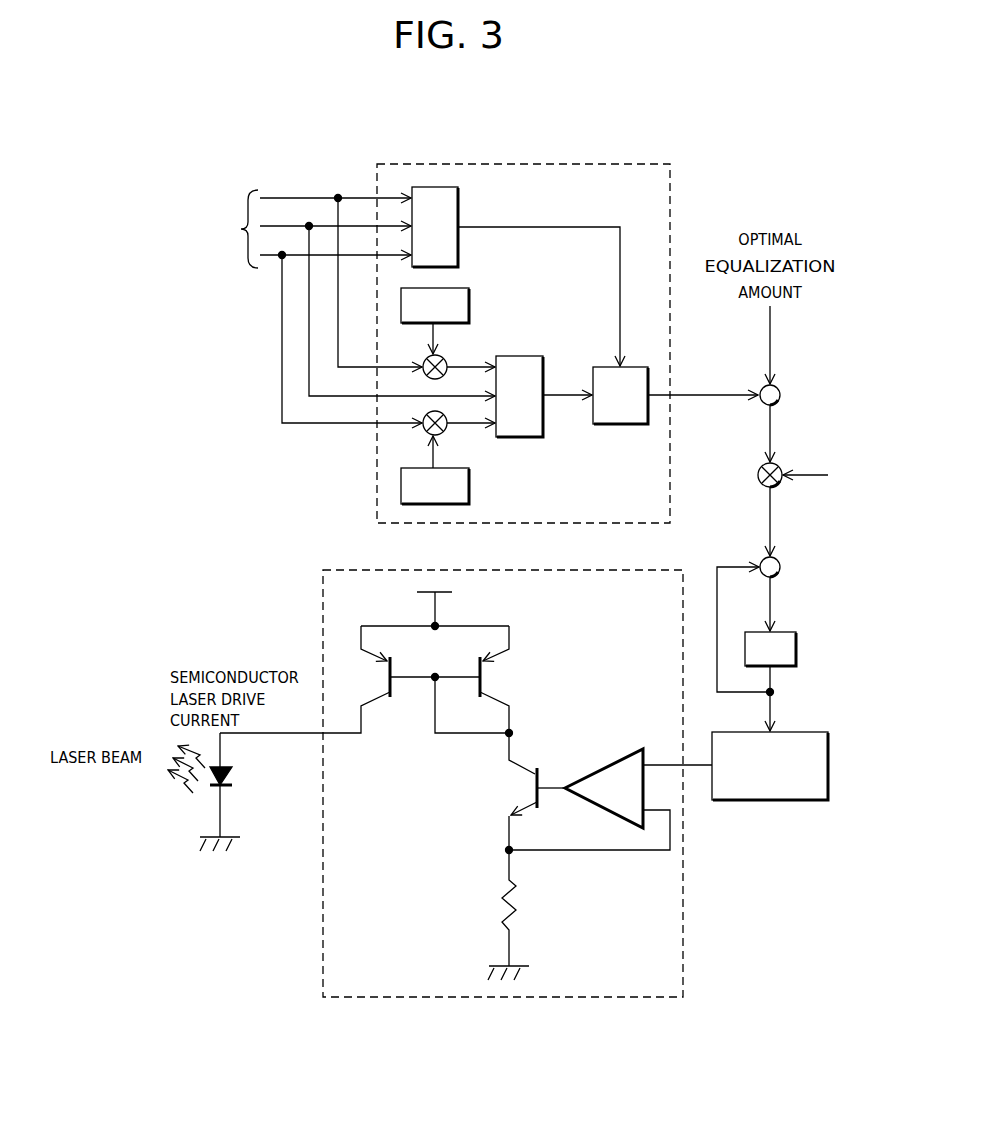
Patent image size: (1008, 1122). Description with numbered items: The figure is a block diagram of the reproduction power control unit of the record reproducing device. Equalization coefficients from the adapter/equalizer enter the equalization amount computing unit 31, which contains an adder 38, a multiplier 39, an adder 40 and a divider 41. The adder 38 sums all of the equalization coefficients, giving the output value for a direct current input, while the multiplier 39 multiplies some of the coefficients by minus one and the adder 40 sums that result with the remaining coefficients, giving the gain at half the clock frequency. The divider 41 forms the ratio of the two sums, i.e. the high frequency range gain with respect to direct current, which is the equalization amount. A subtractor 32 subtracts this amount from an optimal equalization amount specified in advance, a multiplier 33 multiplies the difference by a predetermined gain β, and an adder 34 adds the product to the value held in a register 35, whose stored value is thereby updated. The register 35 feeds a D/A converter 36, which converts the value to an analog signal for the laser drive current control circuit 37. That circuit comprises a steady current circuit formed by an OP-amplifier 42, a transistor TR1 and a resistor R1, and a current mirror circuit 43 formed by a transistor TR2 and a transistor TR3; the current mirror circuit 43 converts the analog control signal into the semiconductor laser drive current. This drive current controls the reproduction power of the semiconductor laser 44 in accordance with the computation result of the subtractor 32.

The equalization amount computing unit 31 is at (546, 163).
The subtractor 32 is at (778, 388).
The multiplier 33 is at (780, 467).
The adder 34 is at (778, 560).
The register 35 is at (796, 651).
The D/A converter 36 is at (768, 800).
The laser drive current control circuit 37 is at (428, 1000).
The adder 38 is at (459, 203).
The multiplier 39 is at (446, 358).
The adder 40 is at (520, 356).
The divider 41 is at (621, 424).
The OP-amplifier 42 is at (610, 764).
The current mirror circuit 43 is at (411, 675).
The semiconductor laser 44 is at (179, 800).
The transistor TR1 is at (512, 766).
The transistor TR2 is at (530, 687).
The transistor TR3 is at (378, 693).
The resistor R1 is at (515, 905).